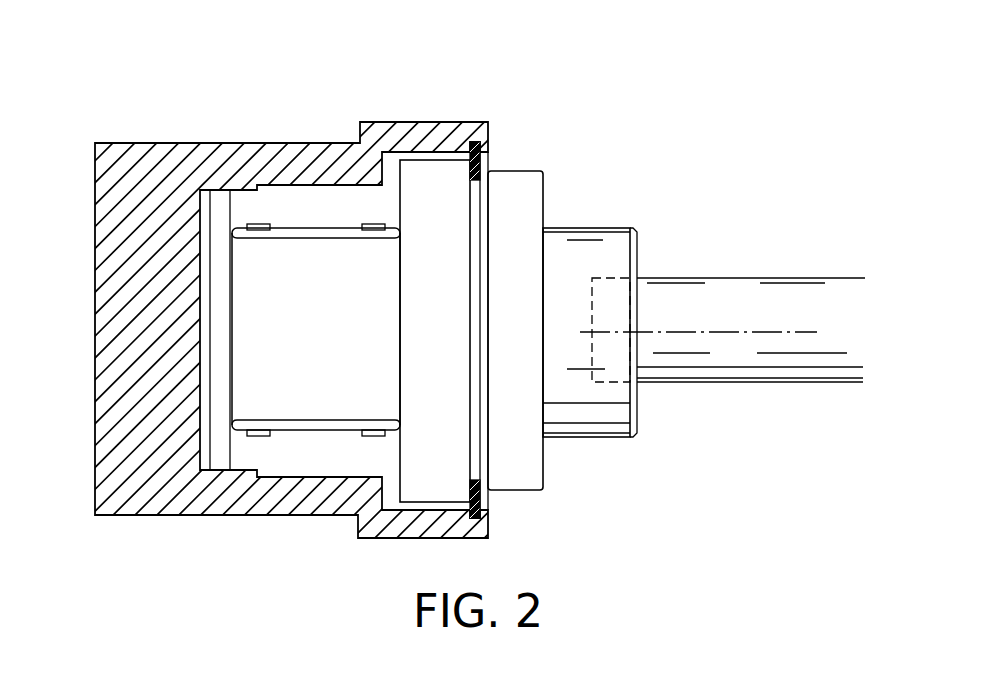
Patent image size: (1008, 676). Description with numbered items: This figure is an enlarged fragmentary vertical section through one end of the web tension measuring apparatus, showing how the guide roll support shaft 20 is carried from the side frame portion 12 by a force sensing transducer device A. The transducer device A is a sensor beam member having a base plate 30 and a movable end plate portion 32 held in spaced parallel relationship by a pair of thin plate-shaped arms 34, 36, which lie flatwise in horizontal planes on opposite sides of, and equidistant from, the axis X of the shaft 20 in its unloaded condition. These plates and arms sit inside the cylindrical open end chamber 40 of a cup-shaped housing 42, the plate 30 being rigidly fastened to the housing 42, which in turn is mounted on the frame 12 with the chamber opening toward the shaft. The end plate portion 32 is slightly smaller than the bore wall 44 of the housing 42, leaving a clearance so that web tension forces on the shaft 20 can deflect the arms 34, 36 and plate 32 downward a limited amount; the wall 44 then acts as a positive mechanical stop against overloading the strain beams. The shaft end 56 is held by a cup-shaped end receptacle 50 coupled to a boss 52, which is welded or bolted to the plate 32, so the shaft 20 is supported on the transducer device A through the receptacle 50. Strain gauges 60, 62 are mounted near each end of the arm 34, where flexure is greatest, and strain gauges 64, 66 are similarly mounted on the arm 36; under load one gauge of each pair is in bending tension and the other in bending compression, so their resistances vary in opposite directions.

The side frame portion 12 is at (104, 445).
The support shaft 20 is at (768, 278).
The base plate 30 is at (212, 188).
The end plate portion 32 is at (433, 172).
The arm 34 is at (328, 233).
The arm 36 is at (308, 425).
The open end chamber 40 is at (292, 193).
The housing 42 is at (158, 212).
The bore wall 44 is at (323, 498).
The end receptacle 50 is at (592, 235).
The boss 52 is at (517, 172).
The shaft end 56 is at (590, 298).
The strain gauge 60 is at (261, 231).
The strain gauge 62 is at (372, 231).
The strain gauge 64 is at (258, 429).
The strain gauge 66 is at (375, 429).
The transducer device A is at (503, 82).
The axis X is at (793, 332).